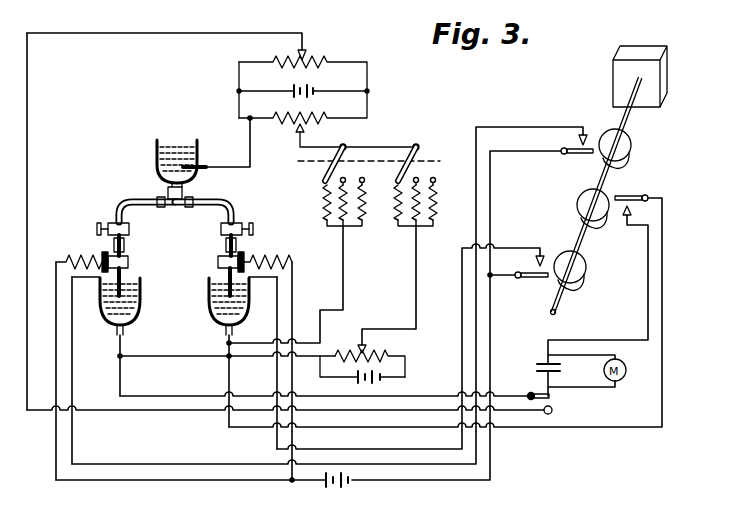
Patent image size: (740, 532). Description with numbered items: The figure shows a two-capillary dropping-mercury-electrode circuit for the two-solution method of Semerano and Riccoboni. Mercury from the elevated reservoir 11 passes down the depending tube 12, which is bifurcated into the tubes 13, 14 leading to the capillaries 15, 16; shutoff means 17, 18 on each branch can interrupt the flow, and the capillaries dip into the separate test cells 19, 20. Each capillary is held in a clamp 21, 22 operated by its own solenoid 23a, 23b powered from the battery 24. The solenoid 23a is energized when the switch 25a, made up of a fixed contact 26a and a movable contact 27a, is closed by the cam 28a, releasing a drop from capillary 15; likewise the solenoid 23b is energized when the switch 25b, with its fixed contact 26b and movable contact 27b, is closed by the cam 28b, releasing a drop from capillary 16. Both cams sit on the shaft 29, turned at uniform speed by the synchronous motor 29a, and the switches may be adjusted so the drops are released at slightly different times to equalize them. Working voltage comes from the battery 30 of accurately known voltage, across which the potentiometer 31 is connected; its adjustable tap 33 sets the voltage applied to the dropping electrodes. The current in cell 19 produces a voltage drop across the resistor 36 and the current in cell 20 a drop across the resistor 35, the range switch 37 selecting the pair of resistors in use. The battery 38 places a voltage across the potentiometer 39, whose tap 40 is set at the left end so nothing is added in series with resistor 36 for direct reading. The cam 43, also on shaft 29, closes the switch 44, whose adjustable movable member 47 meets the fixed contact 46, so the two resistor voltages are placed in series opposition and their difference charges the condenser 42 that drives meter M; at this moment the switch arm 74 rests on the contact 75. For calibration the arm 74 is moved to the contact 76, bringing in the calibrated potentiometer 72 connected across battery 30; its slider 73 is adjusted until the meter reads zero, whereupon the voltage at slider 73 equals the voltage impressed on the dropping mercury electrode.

The mercury reservoir 11 is at (157, 152).
The depending tube 12 is at (184, 193).
The tube 13 is at (133, 204).
The tube 14 is at (227, 207).
The capillary 15 is at (123, 275).
The capillary 16 is at (222, 274).
The shutoff means 17 is at (98, 228).
The shutoff means 18 is at (256, 229).
The test cell 19 is at (142, 300).
The test cell 20 is at (210, 310).
The clamp 21 is at (128, 260).
The clamp 22 is at (218, 260).
The solenoid 23a is at (68, 255).
The solenoid 23b is at (276, 259).
The battery 24 is at (356, 488).
The switch 25a is at (596, 128).
The switch 25b is at (549, 254).
The fixed contact 26a is at (578, 141).
The fixed contact 26b is at (535, 262).
The movable contact 27a is at (580, 160).
The movable contact 27b is at (538, 279).
The cam 28a is at (632, 150).
The cam 28b is at (586, 270).
The shaft 29 is at (637, 118).
The synchronous motor 29a is at (666, 56).
The battery 30 is at (292, 85).
The potentiometer 31 is at (290, 114).
The adjustable tap 33 is at (310, 131).
The resistor 35 is at (322, 198).
The resistor 36 is at (432, 200).
The sensitivity range switch 37 is at (404, 164).
The battery 38 is at (390, 383).
The potentiometer 39 is at (353, 350).
The adjustable tap 40 is at (367, 349).
The condenser 42 is at (540, 364).
The cam 43 is at (577, 205).
The switch 44 is at (619, 214).
The fixed contact 46 is at (632, 211).
The adjustable movable member 47 is at (639, 195).
The calibrated potentiometer 72 is at (296, 53).
The slider 73 is at (307, 51).
The switch arm 74 is at (552, 398).
The contact 75 is at (528, 392).
The contact 76 is at (548, 414).